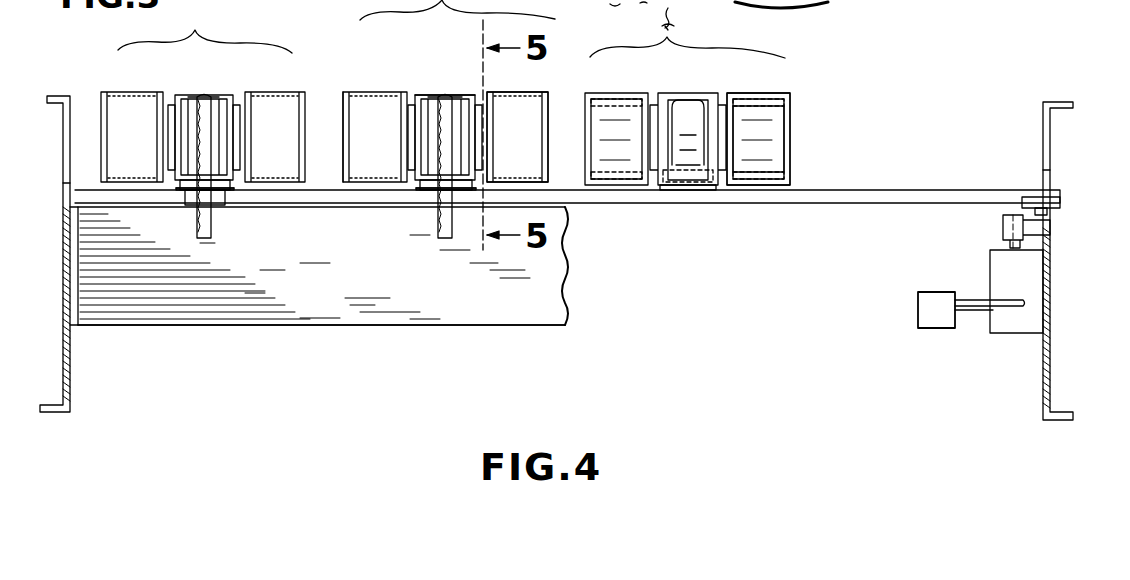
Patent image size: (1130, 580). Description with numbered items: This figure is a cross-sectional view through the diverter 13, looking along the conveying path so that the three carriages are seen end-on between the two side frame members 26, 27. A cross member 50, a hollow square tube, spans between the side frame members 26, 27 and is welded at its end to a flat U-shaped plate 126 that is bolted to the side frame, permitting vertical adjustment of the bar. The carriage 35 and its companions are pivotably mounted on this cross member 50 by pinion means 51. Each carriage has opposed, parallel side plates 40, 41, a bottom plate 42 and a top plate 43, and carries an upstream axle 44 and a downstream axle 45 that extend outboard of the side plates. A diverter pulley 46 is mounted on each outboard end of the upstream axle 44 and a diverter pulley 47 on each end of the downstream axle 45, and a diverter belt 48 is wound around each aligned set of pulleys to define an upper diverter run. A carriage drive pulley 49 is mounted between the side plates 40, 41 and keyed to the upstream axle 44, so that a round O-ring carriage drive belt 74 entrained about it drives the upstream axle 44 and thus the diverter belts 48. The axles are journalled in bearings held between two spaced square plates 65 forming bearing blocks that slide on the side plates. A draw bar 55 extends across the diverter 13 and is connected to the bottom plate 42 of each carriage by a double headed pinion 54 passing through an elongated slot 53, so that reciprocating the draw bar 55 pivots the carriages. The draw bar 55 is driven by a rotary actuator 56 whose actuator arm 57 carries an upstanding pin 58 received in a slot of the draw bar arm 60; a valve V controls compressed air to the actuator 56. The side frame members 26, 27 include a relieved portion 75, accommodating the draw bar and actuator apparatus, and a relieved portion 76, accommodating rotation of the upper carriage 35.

The diverter 13 is at (277, 353).
The side frame member 26 is at (1060, 366).
The side frame member 27 is at (58, 374).
The carriage 35 is at (196, 35).
The side plate 40 is at (466, 106).
The side plate 41 is at (412, 94).
The bottom plate 42 is at (415, 185).
The top plate 43 is at (440, 96).
The upstream axle 44 is at (485, 140).
The downstream axle 45 is at (735, 135).
The diverter pulley 46 is at (343, 100).
The diverter pulley 47 is at (780, 122).
The diverter belt 48 is at (370, 133).
The carriage drive pulley 49 is at (205, 100).
The cross member 50 is at (343, 325).
The pinion means 51 is at (212, 195).
The elongated slot 53 is at (667, 190).
The double headed pinion 54 is at (688, 190).
The draw bar 55 is at (833, 190).
The rotary actuator 56 is at (1039, 282).
The actuator arm 57 is at (1000, 228).
The pin 58 is at (1052, 213).
The draw bar arm 60 is at (1062, 200).
The bearing block plates 65 is at (180, 187).
The carriage drive belt 74 is at (206, 240).
The relieved portion 75 is at (1050, 178).
The relieved portion 76 is at (63, 183).
The U-shaped plate 126 is at (72, 270).